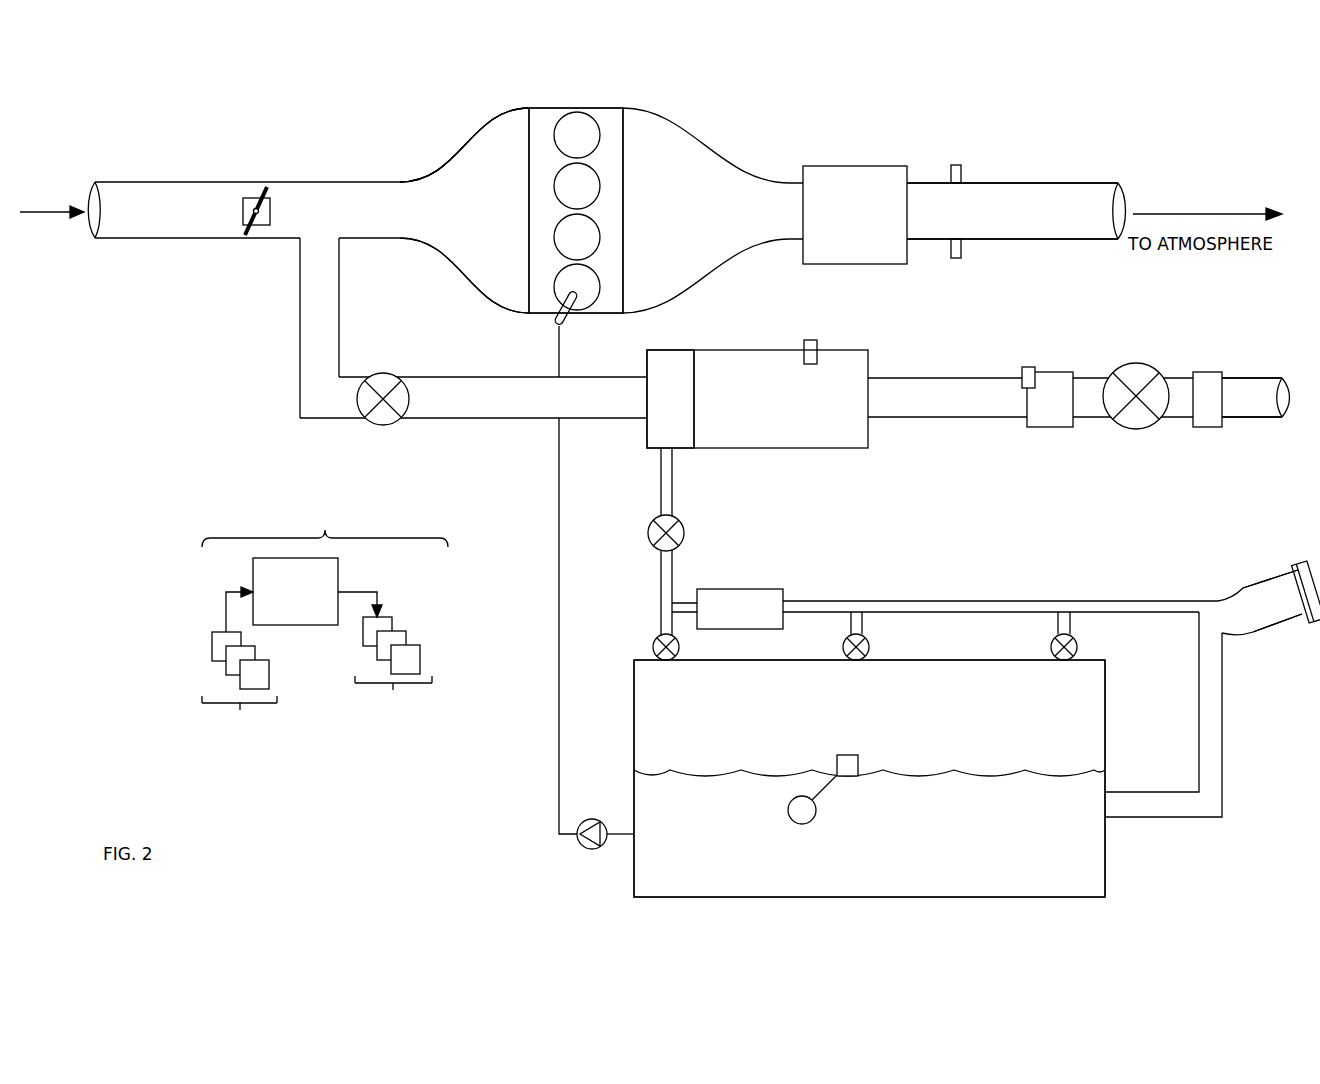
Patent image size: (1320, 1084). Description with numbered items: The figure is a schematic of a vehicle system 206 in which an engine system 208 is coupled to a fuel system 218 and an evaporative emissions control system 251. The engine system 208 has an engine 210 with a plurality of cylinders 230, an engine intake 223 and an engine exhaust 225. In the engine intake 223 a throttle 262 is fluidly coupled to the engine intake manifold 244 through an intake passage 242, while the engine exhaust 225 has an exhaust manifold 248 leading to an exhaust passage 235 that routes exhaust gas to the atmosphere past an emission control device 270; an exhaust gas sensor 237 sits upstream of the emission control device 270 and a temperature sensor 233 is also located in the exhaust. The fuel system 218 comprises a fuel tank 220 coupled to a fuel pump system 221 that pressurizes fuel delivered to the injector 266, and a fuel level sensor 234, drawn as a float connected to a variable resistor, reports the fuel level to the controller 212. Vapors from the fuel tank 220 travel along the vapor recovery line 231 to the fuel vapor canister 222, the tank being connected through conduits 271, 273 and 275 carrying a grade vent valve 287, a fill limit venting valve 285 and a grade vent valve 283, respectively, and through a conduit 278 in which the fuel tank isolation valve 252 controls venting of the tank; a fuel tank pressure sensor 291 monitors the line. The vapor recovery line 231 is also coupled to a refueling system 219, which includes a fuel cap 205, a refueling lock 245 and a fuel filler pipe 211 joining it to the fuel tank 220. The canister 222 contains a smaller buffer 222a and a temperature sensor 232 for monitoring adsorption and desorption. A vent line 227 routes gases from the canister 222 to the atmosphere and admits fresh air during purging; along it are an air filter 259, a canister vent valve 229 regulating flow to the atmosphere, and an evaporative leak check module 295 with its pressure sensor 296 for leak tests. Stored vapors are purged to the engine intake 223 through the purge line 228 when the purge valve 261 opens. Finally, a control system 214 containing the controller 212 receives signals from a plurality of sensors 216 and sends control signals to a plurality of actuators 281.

The vehicle system 206 is at (100, 104).
The engine intake 223 is at (450, 126).
The throttle 262 is at (270, 217).
The intake passage 242 is at (296, 240).
The engine 210 is at (623, 193).
The cylinders 230 is at (600, 134).
The engine intake manifold 244 is at (464, 210).
The exhaust manifold 248 is at (713, 210).
The engine system 208 is at (925, 102).
The fuel injector 266 is at (566, 322).
The engine exhaust 225 is at (800, 108).
The emission control device 270 is at (840, 166).
The exhaust gas sensor 237 is at (951, 174).
The temperature sensor 233 is at (951, 250).
The exhaust passage 235 is at (1072, 183).
The purge line 228 is at (473, 397).
The purge valve 261 is at (378, 375).
The fuel vapor canister 222 is at (870, 372).
The buffer 222a is at (666, 350).
The temperature sensor 232 is at (810, 340).
The vent line 227 is at (1079, 397).
The emissions control system 251 is at (1276, 322).
The evaporative leak check module 295 is at (1050, 372).
The pressure sensor 296 is at (1026, 367).
The canister vent valve 229 is at (1134, 363).
The air filter 259 is at (1210, 372).
The conduit 278 is at (661, 480).
The fuel tank isolation valve 252 is at (656, 548).
The grade vent valve 287 is at (653, 645).
The conduit 271 is at (672, 622).
The fuel tank pressure sensor 291 is at (783, 600).
The vapor recovery line 231 is at (1122, 601).
The conduit 273 is at (849, 622).
The fill limit venting valve 285 is at (870, 645).
The conduit 275 is at (1057, 622).
The grade vent valve 283 is at (1077, 645).
The fuel tank 220 is at (1105, 762).
The fuel system 218 is at (1160, 866).
The fuel level sensor 234 is at (846, 755).
The fuel pump system 221 is at (590, 820).
The fuel filler pipe 211 is at (1222, 708).
The refueling system 219 is at (1270, 562).
The fuel cap 205 is at (1303, 562).
The refueling lock 245 is at (1304, 620).
The control system 214 is at (325, 516).
The controller 212 is at (295, 591).
The sensors 216 is at (239, 668).
The actuators 281 is at (389, 663).